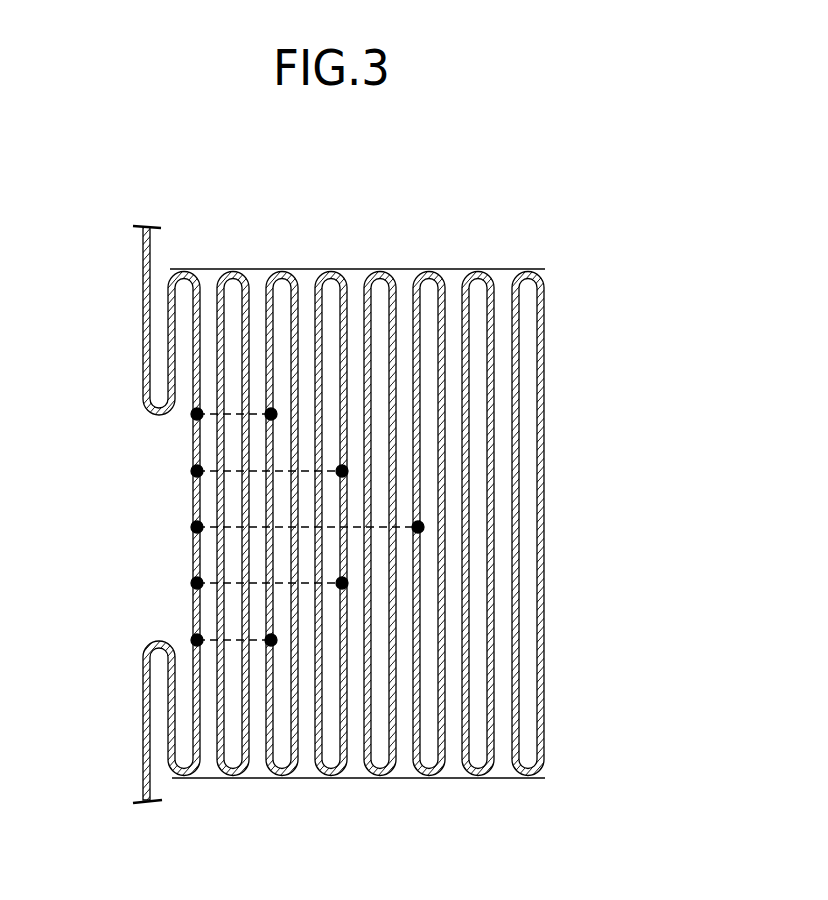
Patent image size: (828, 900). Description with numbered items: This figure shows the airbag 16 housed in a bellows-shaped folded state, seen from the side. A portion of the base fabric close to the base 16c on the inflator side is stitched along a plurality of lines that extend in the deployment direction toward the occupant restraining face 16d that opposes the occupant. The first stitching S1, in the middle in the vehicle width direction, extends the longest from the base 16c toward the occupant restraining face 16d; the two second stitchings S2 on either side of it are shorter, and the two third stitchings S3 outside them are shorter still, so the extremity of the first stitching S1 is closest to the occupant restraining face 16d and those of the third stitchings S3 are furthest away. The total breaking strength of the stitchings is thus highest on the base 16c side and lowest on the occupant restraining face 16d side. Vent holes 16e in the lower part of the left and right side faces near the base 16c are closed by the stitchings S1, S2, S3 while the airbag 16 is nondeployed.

The airbag 16 is at (419, 530).
The base 16c is at (158, 414).
The occupant restraining face 16d is at (544, 440).
The vent hole 16e is at (220, 328).
The first stitching S1 is at (230, 528).
The second stitching S2 is at (232, 473).
The third stitching S3 is at (212, 418).